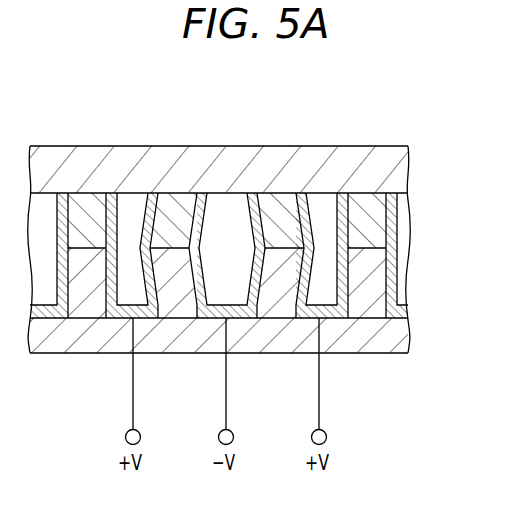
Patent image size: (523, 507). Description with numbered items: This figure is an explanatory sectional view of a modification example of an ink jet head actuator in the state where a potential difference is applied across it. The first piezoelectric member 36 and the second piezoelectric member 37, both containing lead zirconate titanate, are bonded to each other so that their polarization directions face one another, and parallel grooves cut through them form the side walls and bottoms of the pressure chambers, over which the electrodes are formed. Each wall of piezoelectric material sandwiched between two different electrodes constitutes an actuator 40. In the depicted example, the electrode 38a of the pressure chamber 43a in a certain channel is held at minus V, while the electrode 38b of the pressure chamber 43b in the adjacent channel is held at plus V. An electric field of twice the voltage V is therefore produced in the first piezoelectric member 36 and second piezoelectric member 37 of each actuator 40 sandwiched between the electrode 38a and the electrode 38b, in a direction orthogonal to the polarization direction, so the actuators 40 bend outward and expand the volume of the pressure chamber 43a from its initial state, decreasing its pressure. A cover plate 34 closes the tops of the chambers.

The upper substrate / cover plate 34 is at (377, 165).
The first piezoelectric member 36 is at (377, 295).
The second piezoelectric member 37 is at (370, 220).
The electrode 38a is at (245, 320).
The electrode 38b is at (115, 313).
The actuator 40 is at (173, 207).
The pressure chamber 43a is at (228, 208).
The pressure chamber 43b is at (128, 210).